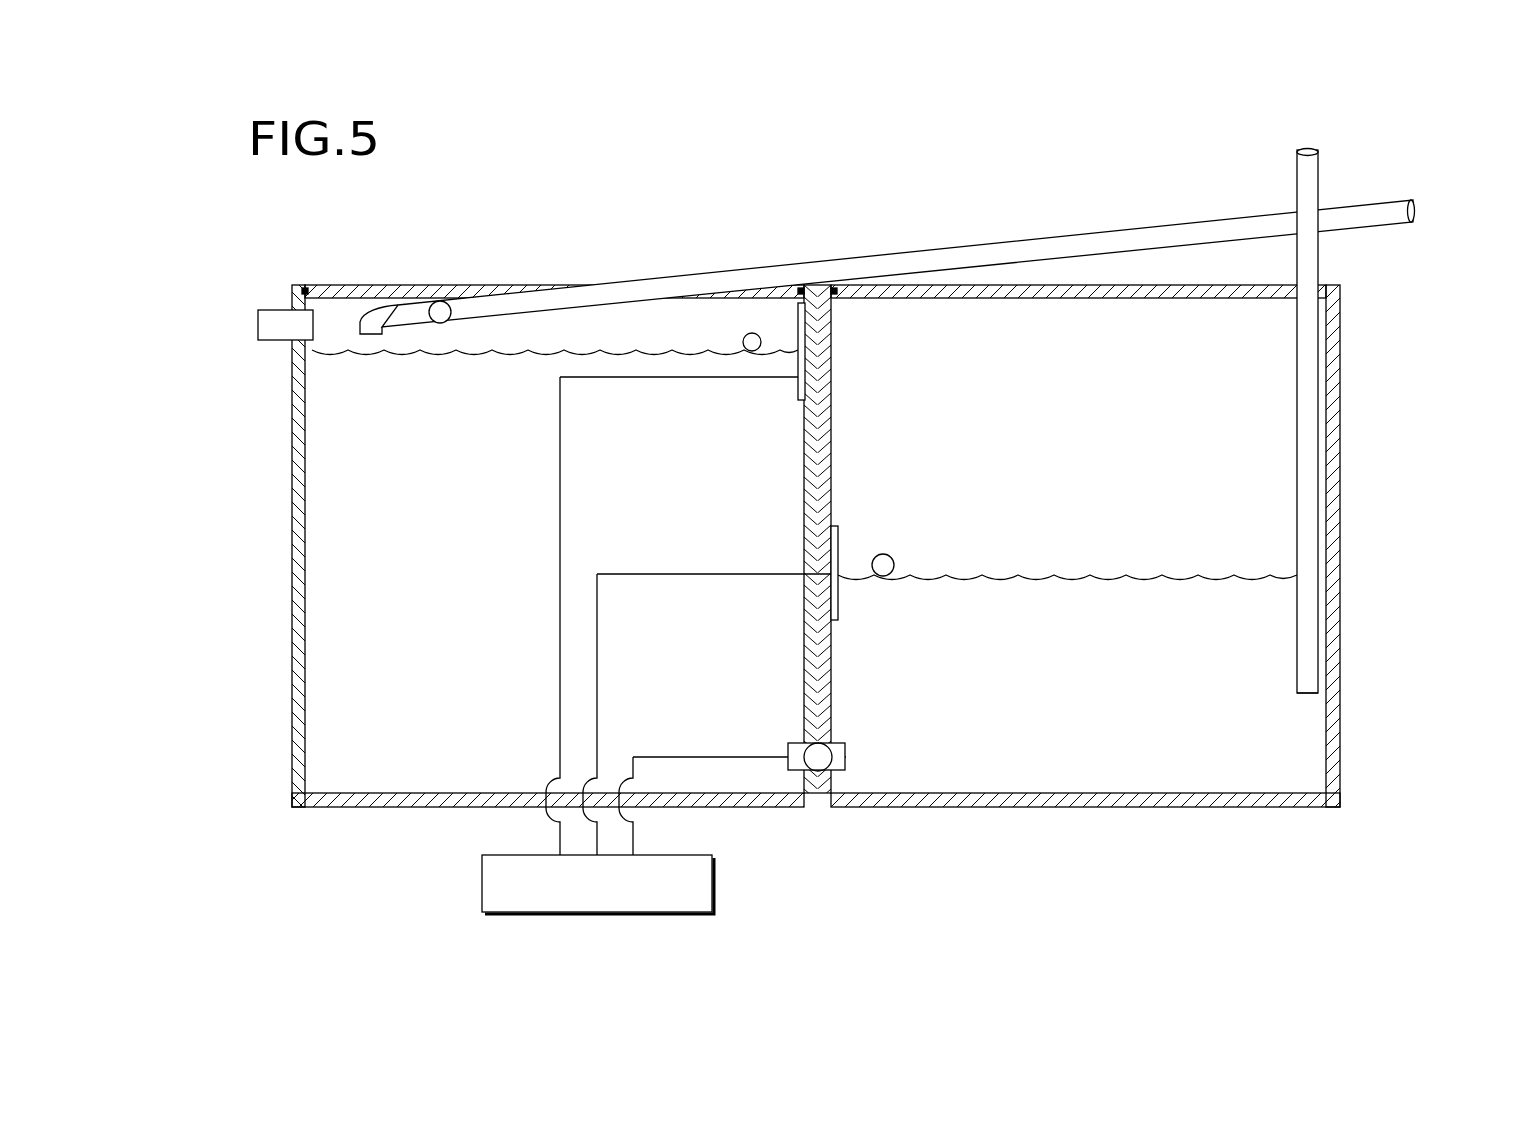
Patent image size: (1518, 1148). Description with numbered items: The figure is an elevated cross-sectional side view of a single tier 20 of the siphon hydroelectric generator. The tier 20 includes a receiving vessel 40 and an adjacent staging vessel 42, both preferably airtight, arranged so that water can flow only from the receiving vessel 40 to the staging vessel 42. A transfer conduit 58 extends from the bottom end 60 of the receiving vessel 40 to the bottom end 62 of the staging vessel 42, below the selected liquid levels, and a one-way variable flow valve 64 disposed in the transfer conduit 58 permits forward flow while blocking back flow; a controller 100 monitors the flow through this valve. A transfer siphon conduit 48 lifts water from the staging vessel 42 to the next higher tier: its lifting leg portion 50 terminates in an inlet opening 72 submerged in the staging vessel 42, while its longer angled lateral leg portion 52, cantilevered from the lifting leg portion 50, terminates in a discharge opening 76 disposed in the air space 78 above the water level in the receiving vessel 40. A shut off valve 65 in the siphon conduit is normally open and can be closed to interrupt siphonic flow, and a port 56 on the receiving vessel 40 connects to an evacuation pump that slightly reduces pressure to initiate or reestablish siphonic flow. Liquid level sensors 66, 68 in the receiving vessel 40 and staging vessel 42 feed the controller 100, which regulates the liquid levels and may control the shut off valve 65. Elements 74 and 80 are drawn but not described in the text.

The tier 20 is at (1352, 417).
The receiving vessel 40 is at (288, 665).
The staging vessel 42 is at (1330, 727).
The transfer siphon conduit 48 is at (1040, 235).
The lifting leg portion 50 is at (1305, 527).
The angled lateral leg portion 52 is at (745, 282).
The port 56 is at (258, 322).
The transfer conduit 58 is at (848, 757).
The bottom end of receiving vessel 60 is at (447, 807).
The bottom end of staging vessel 62 is at (1142, 800).
The one-way variable flow valve 64 is at (800, 757).
The shut off valve 65 is at (452, 310).
The liquid level sensor 66 is at (761, 342).
The liquid level sensor 68 is at (838, 594).
The inlet opening 72 is at (1305, 695).
The nozzle 74 is at (365, 335).
The discharge opening 76 is at (340, 327).
The air space 78 is at (683, 325).
The liquid flow 80 is at (383, 330).
The controller 100 is at (482, 880).